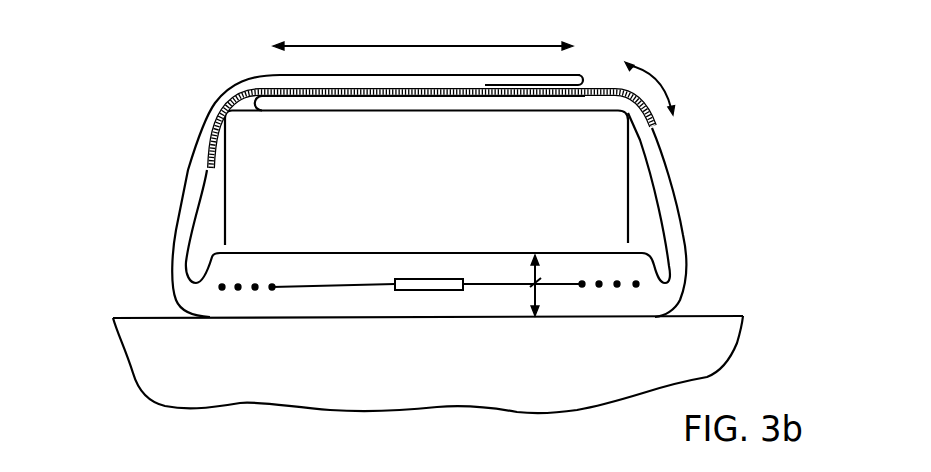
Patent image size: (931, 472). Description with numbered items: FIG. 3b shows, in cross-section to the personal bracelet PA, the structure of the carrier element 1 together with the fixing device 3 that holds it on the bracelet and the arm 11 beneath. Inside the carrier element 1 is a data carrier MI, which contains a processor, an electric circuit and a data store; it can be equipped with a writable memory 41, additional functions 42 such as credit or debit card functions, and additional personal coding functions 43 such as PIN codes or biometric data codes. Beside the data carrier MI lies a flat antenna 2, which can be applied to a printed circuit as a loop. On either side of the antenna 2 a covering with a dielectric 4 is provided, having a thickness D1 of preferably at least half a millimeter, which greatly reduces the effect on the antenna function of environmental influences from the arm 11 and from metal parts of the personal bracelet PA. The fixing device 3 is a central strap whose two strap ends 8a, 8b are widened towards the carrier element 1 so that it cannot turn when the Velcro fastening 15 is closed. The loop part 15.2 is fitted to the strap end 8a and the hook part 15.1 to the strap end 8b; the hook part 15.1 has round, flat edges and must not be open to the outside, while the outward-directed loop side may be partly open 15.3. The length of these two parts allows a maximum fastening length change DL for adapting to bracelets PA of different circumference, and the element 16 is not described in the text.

The carrier element 1 is at (305, 316).
The flat antenna 2 is at (391, 287).
The fixing device 3 is at (421, 196).
The dielectric 4 is at (256, 268).
The strap end 8a is at (662, 157).
The strap end 8b is at (198, 137).
The arm 11 is at (138, 350).
The Velcro fastening 15 is at (447, 84).
The hook part 15.1 is at (228, 90).
The loop part 15.2 is at (585, 100).
The partly open loop side 15.3 is at (662, 82).
The contact 16 is at (620, 304).
The writable memory 41 is at (446, 326).
The additional functions 42 is at (446, 326).
The additional personal coding functions 43 is at (415, 293).
The fastening length change DL is at (423, 28).
The thickness of dielectric D1 is at (533, 278).
The data carrier MI is at (425, 278).
The personal bracelet PA is at (445, 182).